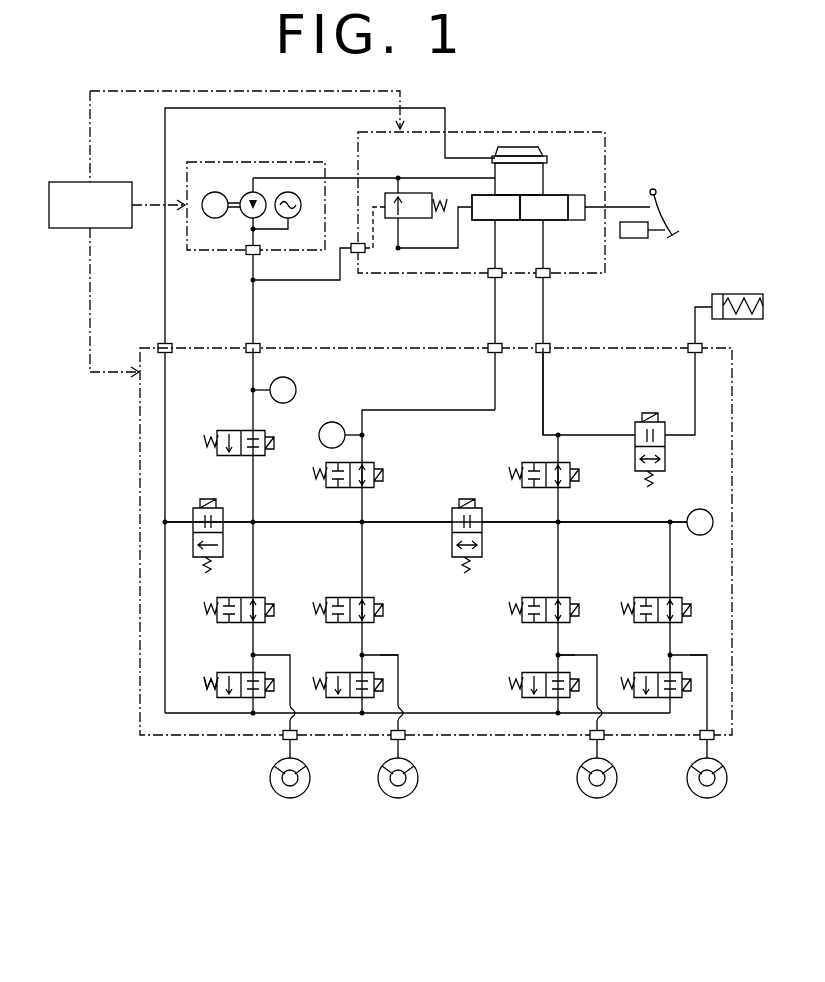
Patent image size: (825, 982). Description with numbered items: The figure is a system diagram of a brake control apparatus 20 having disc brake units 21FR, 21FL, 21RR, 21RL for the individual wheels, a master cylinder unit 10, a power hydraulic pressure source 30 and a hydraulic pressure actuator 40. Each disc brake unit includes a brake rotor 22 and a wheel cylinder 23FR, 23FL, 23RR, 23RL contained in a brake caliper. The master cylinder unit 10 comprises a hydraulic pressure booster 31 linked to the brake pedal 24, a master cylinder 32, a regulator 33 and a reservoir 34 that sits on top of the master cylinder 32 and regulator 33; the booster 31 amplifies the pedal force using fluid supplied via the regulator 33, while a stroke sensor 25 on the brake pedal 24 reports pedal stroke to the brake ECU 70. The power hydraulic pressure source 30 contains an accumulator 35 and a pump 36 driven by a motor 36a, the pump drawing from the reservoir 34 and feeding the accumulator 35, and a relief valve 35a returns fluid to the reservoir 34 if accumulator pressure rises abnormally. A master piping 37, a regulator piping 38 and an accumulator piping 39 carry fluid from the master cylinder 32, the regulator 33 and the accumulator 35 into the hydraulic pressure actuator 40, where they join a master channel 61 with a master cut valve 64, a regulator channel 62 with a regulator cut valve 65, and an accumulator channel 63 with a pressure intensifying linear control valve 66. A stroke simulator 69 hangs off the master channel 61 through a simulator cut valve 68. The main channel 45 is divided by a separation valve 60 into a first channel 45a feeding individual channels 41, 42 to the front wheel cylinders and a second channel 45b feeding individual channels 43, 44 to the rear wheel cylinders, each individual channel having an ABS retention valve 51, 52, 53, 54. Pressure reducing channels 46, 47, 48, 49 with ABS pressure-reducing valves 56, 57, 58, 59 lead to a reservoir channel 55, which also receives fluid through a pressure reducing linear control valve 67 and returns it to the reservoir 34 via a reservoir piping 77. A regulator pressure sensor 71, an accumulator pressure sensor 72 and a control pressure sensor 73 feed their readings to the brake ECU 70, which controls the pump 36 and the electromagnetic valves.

The master cylinder unit 10 is at (565, 132).
The brake control apparatus 20 is at (642, 104).
The disc brake unit 21RR is at (263, 799).
The disc brake unit 21RL is at (371, 799).
The disc brake unit 21FR is at (570, 799).
The disc brake unit 21FL is at (680, 799).
The brake rotor 22 is at (270, 779).
The wheel cylinder 23RR is at (287, 758).
The wheel cylinder 23RL is at (396, 758).
The wheel cylinder 23FR is at (595, 758).
The wheel cylinder 23FL is at (705, 758).
The brake pedal 24 is at (681, 236).
The stroke sensor 25 is at (634, 238).
The power hydraulic pressure source 30 is at (262, 162).
The hydraulic pressure booster 31 is at (580, 195).
The master cylinder 32 is at (530, 221).
The regulator 33 is at (486, 221).
The reservoir 34 is at (520, 147).
The accumulator 35 is at (292, 220).
The relief valve 35a is at (413, 220).
The pump 36 is at (245, 218).
The motor 36a is at (215, 192).
The master piping 37 is at (545, 309).
The regulator piping 38 is at (494, 309).
The accumulator piping 39 is at (255, 312).
The hydraulic pressure actuator 40 is at (735, 348).
The individual channel 41 is at (584, 655).
The individual channel 42 is at (696, 655).
The individual channel 43 is at (281, 655).
The individual channel 44 is at (392, 655).
The main channel 45 is at (611, 512).
The first channel 45a is at (590, 523).
The second channel 45b is at (272, 523).
The pressure reducing channel 46 is at (556, 654).
The pressure reducing channel 47 is at (691, 662).
The pressure reducing channel 48 is at (247, 662).
The pressure reducing channel 49 is at (404, 654).
The ABS retention valve 51 is at (562, 598).
The ABS retention valve 52 is at (674, 598).
The ABS retention valve 53 is at (255, 598).
The ABS retention valve 54 is at (366, 598).
The reservoir channel 55 is at (197, 712).
The ABS pressure-reducing valve 56 is at (519, 680).
The ABS pressure-reducing valve 57 is at (635, 673).
The ABS pressure-reducing valve 58 is at (213, 681).
The ABS pressure-reducing valve 59 is at (327, 672).
The separation valve 60 is at (482, 554).
The master channel 61 is at (543, 420).
The regulator channel 62 is at (440, 410).
The accumulator channel 63 is at (253, 495).
The master cut valve 64 is at (574, 463).
The regulator cut valve 65 is at (378, 463).
The pressure intensifying linear control valve 66 is at (266, 457).
The pressure reducing linear control valve 67 is at (205, 499).
The simulator cut valve 68 is at (666, 461).
The stroke simulator 69 is at (738, 294).
The brake ECU 70 is at (76, 182).
The regulator pressure sensor 71 is at (330, 422).
The accumulator pressure sensor 72 is at (294, 381).
The control pressure sensor 73 is at (700, 509).
The reservoir piping 77 is at (166, 297).